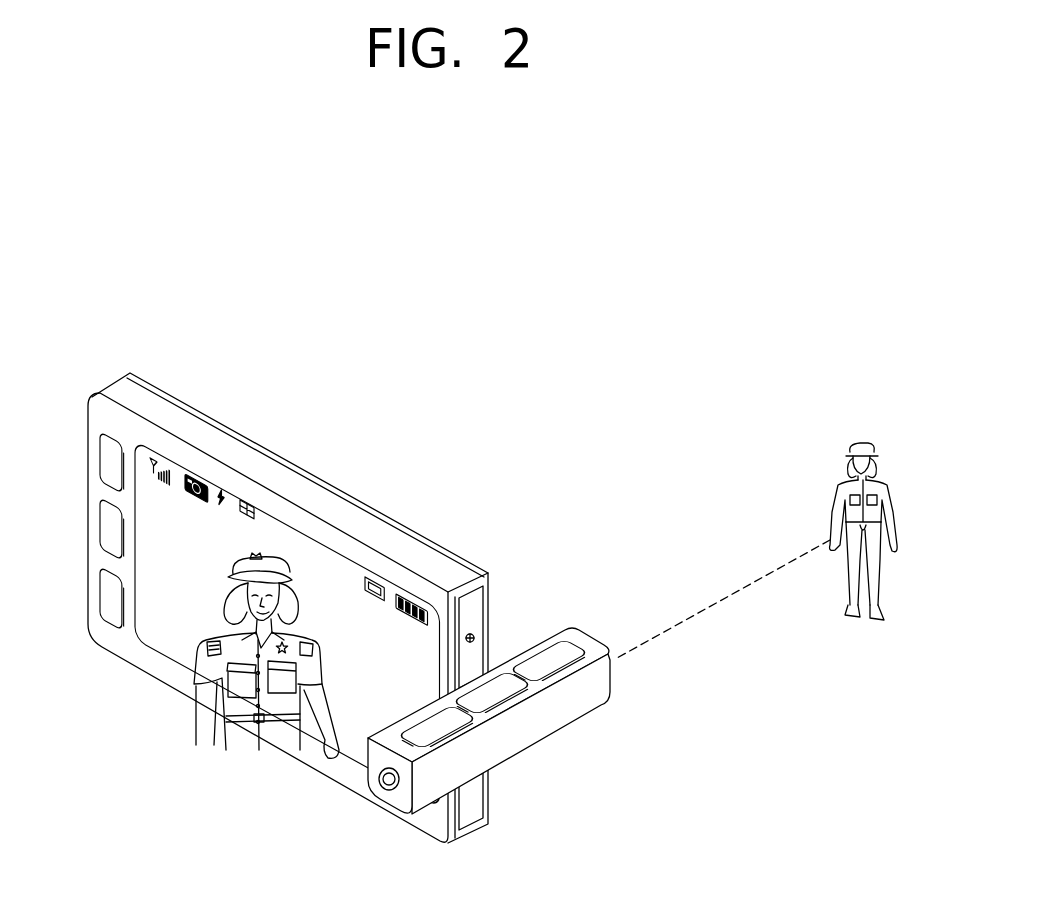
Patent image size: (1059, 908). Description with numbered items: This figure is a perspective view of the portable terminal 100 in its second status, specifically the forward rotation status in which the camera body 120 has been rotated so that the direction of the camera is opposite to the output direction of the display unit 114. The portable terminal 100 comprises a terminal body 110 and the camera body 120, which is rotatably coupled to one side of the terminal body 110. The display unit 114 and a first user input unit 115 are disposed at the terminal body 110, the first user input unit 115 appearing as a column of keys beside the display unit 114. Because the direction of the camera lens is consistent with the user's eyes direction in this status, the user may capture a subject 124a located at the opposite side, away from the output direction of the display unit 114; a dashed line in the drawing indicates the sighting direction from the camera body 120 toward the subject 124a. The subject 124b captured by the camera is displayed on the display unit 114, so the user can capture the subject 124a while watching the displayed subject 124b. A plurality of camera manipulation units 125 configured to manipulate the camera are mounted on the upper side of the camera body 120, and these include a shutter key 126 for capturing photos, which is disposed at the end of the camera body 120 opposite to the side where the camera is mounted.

The portable terminal 100 is at (192, 252).
The terminal body 110 is at (293, 443).
The display unit 114 is at (166, 653).
The first user input unit 115 is at (104, 534).
The camera body 120 is at (514, 772).
The subject 124a is at (840, 492).
The subject captured by the camera 124b is at (248, 696).
The camera manipulation units 125 is at (605, 757).
The shutter key 126 is at (383, 784).